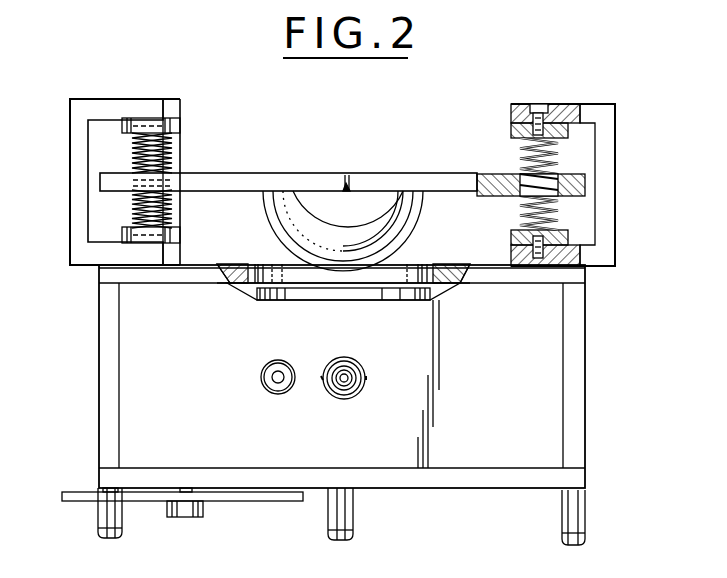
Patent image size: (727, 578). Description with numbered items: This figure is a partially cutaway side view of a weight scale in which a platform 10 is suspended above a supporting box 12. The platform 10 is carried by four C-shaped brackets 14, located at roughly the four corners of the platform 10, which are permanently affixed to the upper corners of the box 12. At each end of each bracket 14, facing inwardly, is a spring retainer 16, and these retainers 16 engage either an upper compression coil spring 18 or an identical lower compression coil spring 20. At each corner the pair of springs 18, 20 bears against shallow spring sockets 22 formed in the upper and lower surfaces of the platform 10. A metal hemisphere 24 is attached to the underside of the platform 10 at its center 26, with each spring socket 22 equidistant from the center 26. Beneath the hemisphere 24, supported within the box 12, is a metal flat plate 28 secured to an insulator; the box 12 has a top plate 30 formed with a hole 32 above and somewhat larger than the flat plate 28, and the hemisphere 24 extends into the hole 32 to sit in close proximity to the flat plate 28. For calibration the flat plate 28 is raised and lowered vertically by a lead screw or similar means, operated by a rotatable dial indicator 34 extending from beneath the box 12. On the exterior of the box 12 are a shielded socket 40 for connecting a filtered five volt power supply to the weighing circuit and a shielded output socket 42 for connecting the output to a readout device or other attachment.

The platform 10 is at (246, 171).
The supporting box 12 is at (98, 388).
The C-shaped bracket 14 is at (69, 172).
The spring retainer 16 is at (181, 131).
The upper compression coil spring 18 is at (170, 157).
The lower compression coil spring 20 is at (170, 203).
The spring socket 22 is at (560, 165).
The metal hemisphere 24 is at (360, 228).
The center 26 is at (350, 186).
The flat plate 28 is at (319, 297).
The top plate 30 is at (580, 279).
The hole 32 is at (444, 275).
The dial indicator 34 is at (80, 502).
The shielded socket 40 is at (279, 360).
The shielded output socket 42 is at (360, 364).